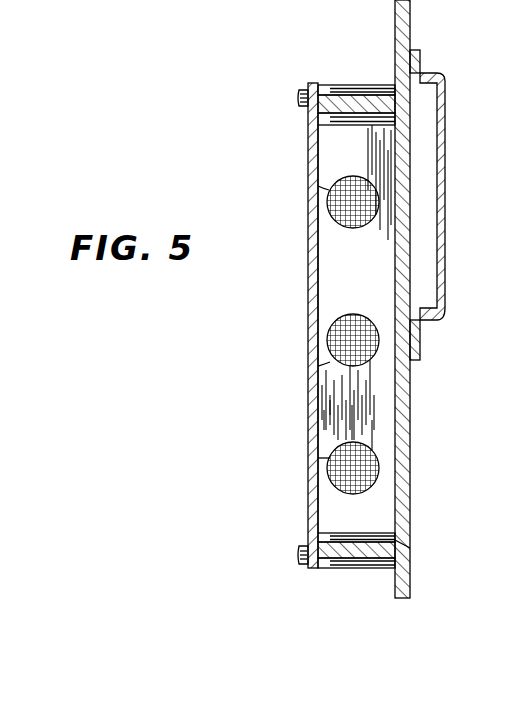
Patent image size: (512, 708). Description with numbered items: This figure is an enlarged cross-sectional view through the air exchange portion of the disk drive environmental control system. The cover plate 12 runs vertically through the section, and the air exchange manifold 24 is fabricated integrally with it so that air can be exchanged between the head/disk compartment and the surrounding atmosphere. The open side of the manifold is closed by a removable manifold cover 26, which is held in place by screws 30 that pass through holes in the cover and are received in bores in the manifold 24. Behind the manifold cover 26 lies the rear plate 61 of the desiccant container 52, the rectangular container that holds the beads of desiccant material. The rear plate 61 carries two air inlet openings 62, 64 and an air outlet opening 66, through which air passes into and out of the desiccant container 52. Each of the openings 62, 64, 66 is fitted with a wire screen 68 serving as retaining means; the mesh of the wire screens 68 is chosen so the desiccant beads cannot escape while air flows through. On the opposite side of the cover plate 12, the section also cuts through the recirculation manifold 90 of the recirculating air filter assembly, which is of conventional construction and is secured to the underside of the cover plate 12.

The cover plate 12 is at (404, 22).
The recirculation manifold 90 is at (446, 130).
The manifold cover 26 is at (308, 310).
The rear plate 61 is at (319, 253).
The air exchange manifold 24 is at (347, 102).
The screws 30 is at (300, 101).
The wire screens 68 is at (357, 186).
The air outlet opening 66 is at (330, 192).
The air inlet opening 64 is at (332, 362).
The air inlet opening 62 is at (330, 458).
The desiccant container 52 is at (410, 544).